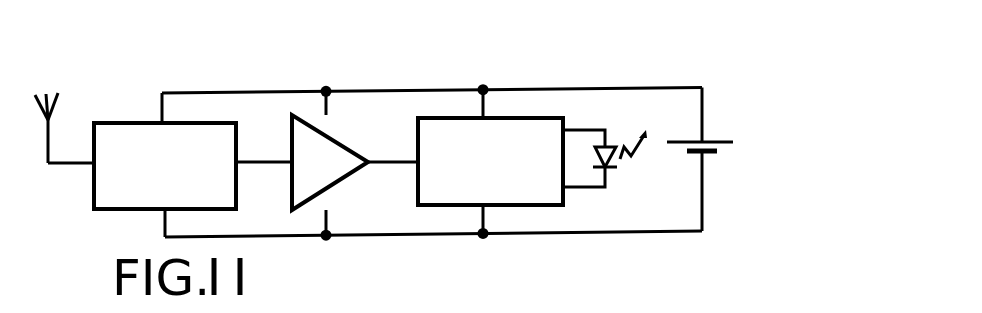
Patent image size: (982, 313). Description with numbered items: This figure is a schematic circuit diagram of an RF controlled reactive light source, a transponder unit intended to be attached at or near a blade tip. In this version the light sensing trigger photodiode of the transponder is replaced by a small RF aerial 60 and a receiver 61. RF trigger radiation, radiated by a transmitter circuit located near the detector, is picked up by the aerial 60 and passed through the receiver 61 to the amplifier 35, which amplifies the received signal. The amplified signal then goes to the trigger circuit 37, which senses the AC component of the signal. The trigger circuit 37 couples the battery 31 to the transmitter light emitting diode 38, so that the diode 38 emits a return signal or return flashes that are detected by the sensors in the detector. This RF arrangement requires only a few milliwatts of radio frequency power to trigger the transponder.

The battery 31 is at (710, 138).
The amplifier 35 is at (337, 138).
The trigger circuit 37 is at (513, 118).
The transmitter light emitting diode 38 is at (613, 144).
The RF aerial 60 is at (50, 119).
The receiver 61 is at (137, 123).